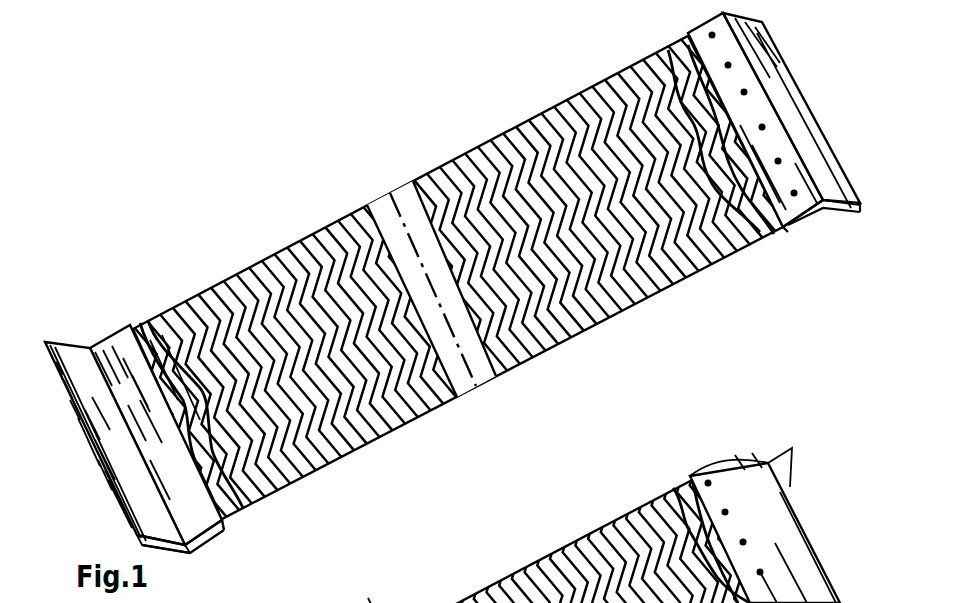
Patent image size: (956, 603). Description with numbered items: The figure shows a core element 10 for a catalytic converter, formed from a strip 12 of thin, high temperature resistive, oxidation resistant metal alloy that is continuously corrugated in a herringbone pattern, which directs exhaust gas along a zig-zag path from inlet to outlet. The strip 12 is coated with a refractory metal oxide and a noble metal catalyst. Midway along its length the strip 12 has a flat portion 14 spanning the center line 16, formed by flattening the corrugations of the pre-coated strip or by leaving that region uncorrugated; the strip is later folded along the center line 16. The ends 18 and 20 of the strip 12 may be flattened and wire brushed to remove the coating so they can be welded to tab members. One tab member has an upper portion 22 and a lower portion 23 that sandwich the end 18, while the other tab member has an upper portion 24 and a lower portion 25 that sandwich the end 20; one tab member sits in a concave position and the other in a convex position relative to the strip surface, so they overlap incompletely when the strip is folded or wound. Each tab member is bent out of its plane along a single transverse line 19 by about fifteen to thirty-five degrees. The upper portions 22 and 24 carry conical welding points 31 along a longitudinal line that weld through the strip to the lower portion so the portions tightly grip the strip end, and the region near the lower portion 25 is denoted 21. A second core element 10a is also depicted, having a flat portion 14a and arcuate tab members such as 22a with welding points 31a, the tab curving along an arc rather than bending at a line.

In FIG. 1, the core element 10 is at (484, 122).
In FIG. 1, the strip 12 is at (63, 383).
In FIG. 1, the flat portion 14 is at (403, 212).
In FIG. 1, the center line 16 is at (483, 383).
In FIG. 1, the end of strip 18 is at (817, 217).
In FIG. 1, the transverse line 19 is at (762, 80).
In FIG. 1, the end of strip 20 is at (222, 524).
In FIG. 1, the cap bottom corner 21 is at (185, 548).
In FIG. 1, the upper portion of tab member 22 is at (789, 108).
In FIG. 1, the lower portion of tab member 23 is at (787, 220).
In FIG. 1, the upper portion of tab member 24 is at (143, 473).
In FIG. 1, the lower portion of tab member 25 is at (197, 543).
In FIG. 1, the welding points 31 is at (778, 160).
In FIG. 2, the alternate fin assembly 10a is at (486, 563).
In FIG. 2, the flat band 14a is at (393, 602).
In FIG. 2, the arcuate tab member 22a is at (790, 550).
In FIG. 2, the rivets 31a is at (743, 542).